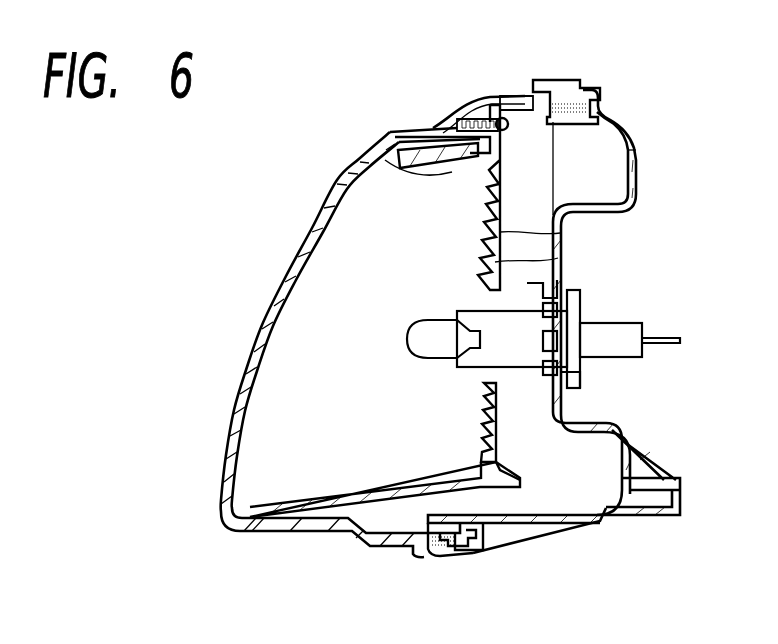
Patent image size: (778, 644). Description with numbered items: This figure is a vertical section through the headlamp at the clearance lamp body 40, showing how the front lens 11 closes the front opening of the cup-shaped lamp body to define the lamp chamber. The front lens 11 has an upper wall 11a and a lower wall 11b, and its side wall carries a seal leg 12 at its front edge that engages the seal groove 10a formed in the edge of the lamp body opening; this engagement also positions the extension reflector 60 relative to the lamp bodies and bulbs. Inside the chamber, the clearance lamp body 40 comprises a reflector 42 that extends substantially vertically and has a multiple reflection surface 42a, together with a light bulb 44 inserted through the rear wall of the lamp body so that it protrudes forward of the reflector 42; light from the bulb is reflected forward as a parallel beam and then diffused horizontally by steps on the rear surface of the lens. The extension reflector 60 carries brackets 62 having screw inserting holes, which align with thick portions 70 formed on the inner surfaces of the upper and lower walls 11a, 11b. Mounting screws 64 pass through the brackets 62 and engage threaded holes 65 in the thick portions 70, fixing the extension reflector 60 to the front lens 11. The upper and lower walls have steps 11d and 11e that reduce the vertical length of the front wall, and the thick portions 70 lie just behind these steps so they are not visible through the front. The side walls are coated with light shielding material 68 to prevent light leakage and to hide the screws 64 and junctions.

The seal groove 10a is at (583, 84).
The front lens 11 is at (307, 242).
The upper wall 11a is at (430, 122).
The lower wall 11b is at (292, 536).
The step 11d is at (443, 121).
The step 11e is at (356, 546).
The seal leg 12 is at (553, 97).
The clearance lamp body 40 is at (355, 290).
The reflector 42 is at (560, 233).
The multiple reflection surface 42a is at (558, 258).
The light bulb 44 is at (407, 340).
The extension reflector 60 is at (312, 482).
The bracket 62 is at (535, 95).
The mounting screw 64 is at (507, 128).
The threaded hole 65 is at (473, 108).
The light shielding material 68 is at (410, 132).
The thick portion 70 is at (393, 167).